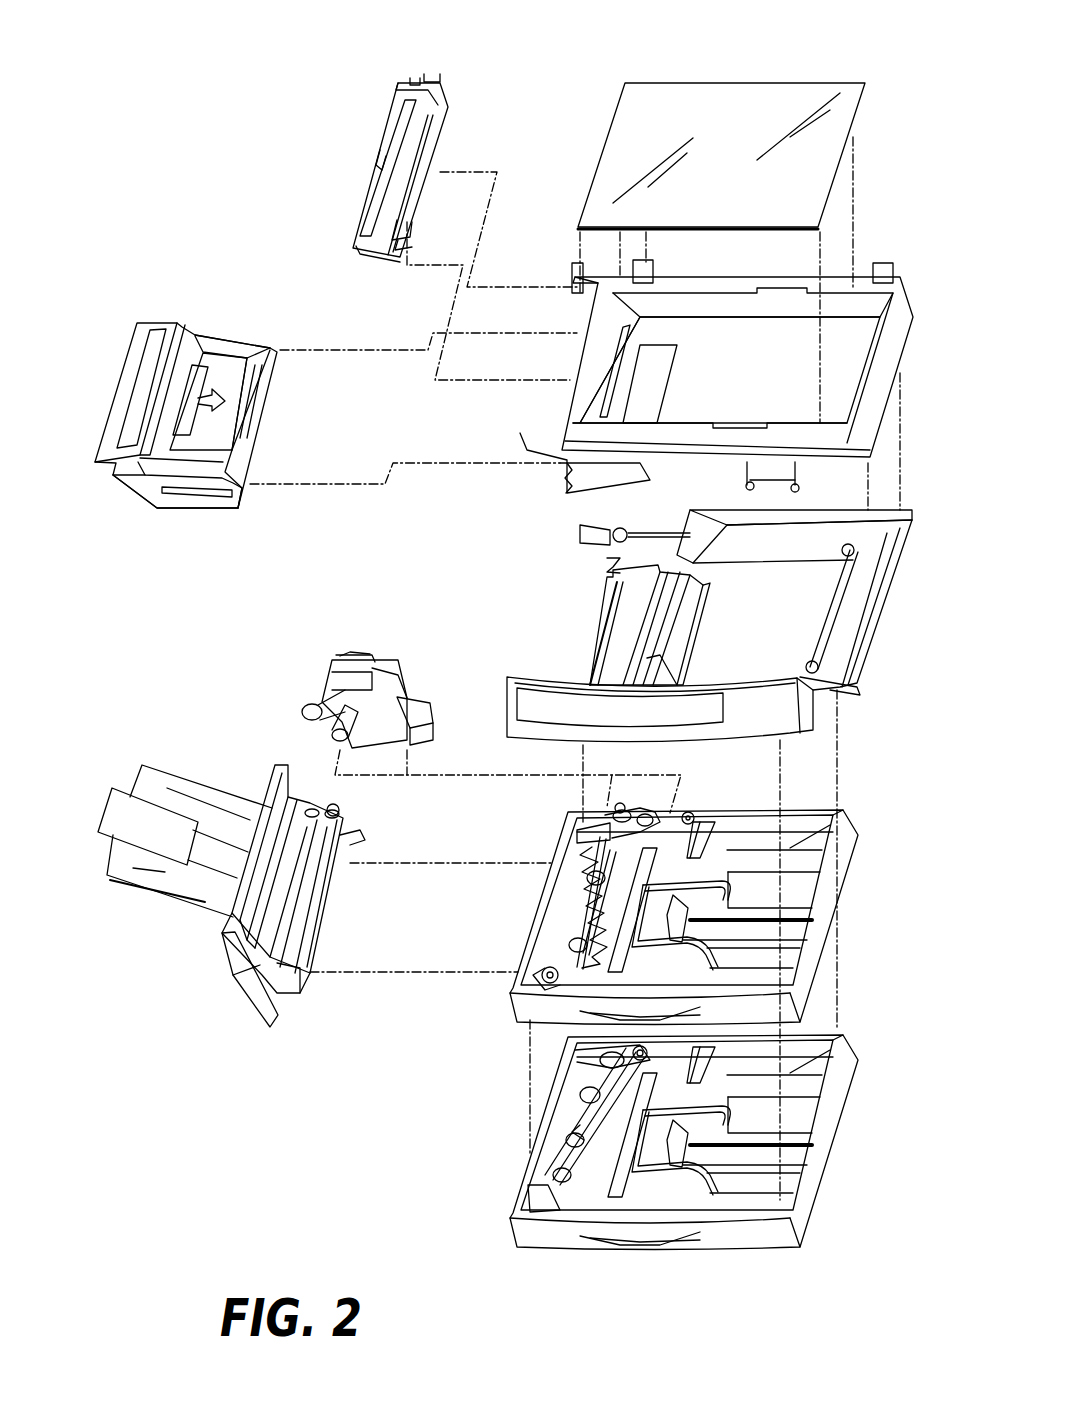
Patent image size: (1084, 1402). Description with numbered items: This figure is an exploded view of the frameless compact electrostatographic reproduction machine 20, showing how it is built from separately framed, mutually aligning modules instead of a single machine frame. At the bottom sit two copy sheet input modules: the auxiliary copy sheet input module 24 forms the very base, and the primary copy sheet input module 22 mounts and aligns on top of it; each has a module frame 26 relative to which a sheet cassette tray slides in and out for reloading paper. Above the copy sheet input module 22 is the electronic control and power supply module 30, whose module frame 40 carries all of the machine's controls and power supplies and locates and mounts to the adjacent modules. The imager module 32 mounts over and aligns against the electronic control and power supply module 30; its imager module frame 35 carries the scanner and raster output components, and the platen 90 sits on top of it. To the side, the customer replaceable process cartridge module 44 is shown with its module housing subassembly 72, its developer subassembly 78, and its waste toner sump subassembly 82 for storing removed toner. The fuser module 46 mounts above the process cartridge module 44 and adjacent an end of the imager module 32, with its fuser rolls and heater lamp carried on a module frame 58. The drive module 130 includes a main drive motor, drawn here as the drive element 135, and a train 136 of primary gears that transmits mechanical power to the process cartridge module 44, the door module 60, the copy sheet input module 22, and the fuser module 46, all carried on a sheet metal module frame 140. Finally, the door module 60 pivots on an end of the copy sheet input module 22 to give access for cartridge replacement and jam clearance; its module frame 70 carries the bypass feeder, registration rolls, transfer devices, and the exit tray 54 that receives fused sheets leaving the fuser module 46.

The electrostatographic reproduction machine 20 is at (538, 50).
The copy sheet input module 22 is at (850, 902).
The auxiliary copy sheet input module 24 is at (496, 1154).
The module frame 26 is at (725, 812).
The electronic control and power supply module 30 is at (893, 621).
The imager module 32 is at (910, 368).
The imager module frame 35 is at (754, 307).
The module frame 40 is at (760, 567).
The process cartridge module 44 is at (208, 311).
The fuser module 46 is at (406, 123).
The exit tray 54 is at (166, 875).
The module frame 58 is at (400, 192).
The door module 60 is at (167, 748).
The module frame 70 is at (253, 1000).
The module housing subassembly 72 is at (235, 343).
The developer subassembly 78 is at (262, 413).
The waste toner sump subassembly 82 is at (150, 493).
The platen 90 is at (746, 129).
The drive module 130 is at (305, 647).
The motor 135 is at (352, 657).
The train of primary gears 136 is at (305, 710).
The module frame 140 is at (400, 688).